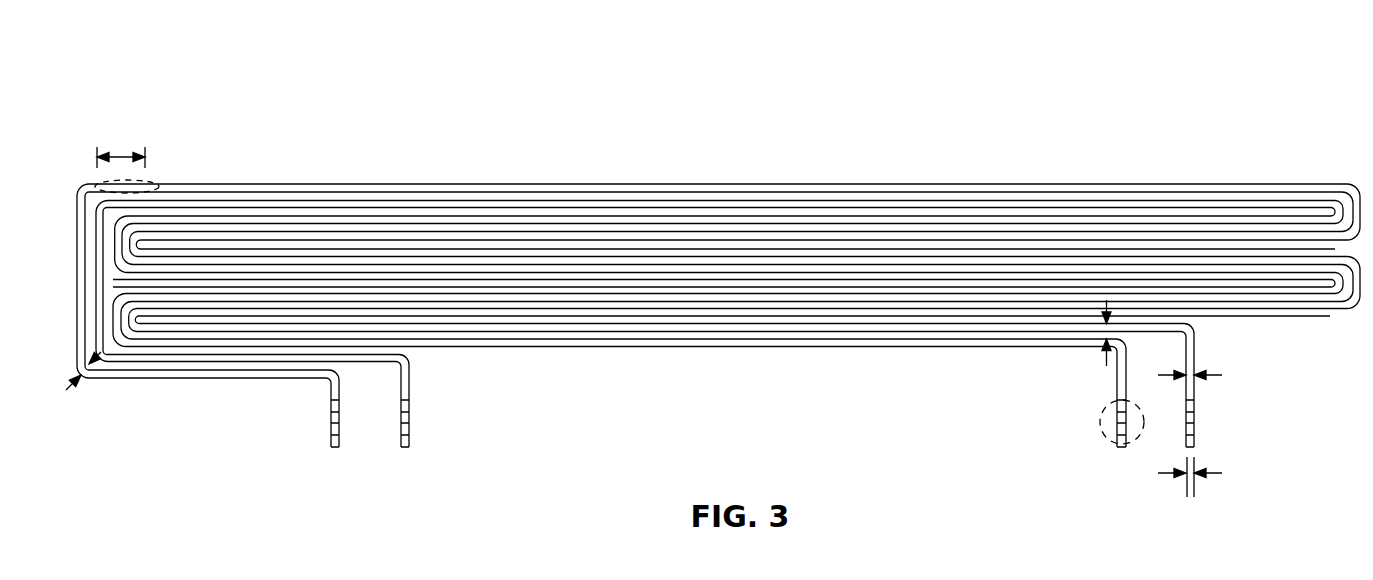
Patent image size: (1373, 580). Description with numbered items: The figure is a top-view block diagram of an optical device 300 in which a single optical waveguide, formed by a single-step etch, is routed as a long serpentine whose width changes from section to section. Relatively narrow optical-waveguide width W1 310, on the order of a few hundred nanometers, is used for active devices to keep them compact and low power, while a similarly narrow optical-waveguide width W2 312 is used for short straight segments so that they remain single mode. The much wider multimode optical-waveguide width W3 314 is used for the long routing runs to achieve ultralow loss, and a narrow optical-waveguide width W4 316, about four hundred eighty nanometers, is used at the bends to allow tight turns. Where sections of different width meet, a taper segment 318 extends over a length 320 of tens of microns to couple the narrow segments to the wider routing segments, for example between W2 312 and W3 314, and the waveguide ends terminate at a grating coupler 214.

The optical device 300 is at (1110, 92).
The optical-waveguide width W1 310 is at (1190, 497).
The optical-waveguide width W2 312 is at (1194, 377).
The optical-waveguide width W3 314 is at (1106, 333).
The optical-waveguide width W4 316 is at (86, 374).
The taper segment 318 is at (158, 184).
The length 320 is at (137, 119).
The grating coupler 214 is at (1108, 450).